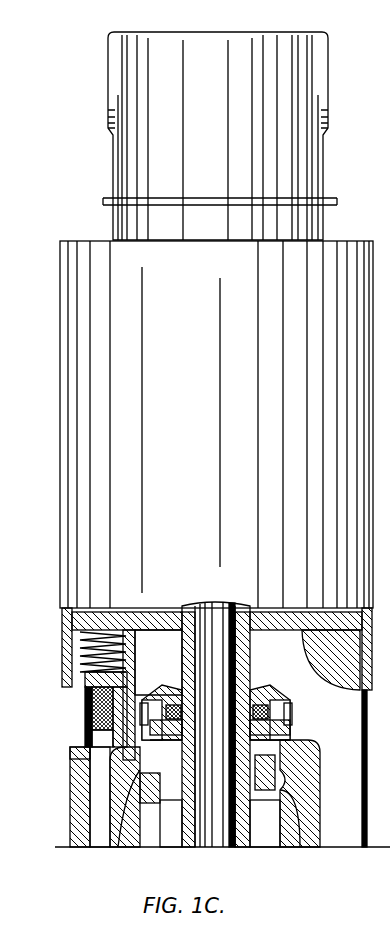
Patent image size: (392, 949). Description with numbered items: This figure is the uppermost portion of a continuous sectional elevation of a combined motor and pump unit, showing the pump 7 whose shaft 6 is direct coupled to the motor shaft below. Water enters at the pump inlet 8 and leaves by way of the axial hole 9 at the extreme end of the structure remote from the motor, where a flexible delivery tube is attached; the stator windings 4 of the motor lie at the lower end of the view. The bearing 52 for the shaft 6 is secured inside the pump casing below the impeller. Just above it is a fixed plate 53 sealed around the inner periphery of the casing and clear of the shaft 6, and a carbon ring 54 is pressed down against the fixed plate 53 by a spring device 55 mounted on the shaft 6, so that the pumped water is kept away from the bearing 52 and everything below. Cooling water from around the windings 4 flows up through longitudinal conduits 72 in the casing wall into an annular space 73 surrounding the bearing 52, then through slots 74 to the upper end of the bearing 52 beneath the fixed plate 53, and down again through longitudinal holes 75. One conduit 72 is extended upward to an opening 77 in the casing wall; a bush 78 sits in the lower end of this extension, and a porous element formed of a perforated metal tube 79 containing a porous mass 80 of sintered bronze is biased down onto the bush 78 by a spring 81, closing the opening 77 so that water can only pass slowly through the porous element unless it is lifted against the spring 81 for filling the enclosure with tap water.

The axial hole 9 is at (218, 23).
The pump 7 is at (52, 480).
The shaft 6 is at (200, 606).
The windings 4 is at (373, 633).
The pump inlet 8 is at (345, 794).
The longitudinal conduits 72 is at (62, 645).
The spring 81 is at (108, 622).
The porous mass 80 is at (85, 700).
The perforated metal tube 79 is at (92, 712).
The opening 77 is at (90, 727).
The bush 78 is at (78, 756).
The annular space 73 is at (108, 803).
The slots 74 is at (130, 790).
The longitudinal holes 75 is at (157, 830).
The spring device 55 is at (262, 683).
The carbon ring 54 is at (285, 710).
The fixed plate 53 is at (290, 728).
The bearing 52 is at (305, 790).